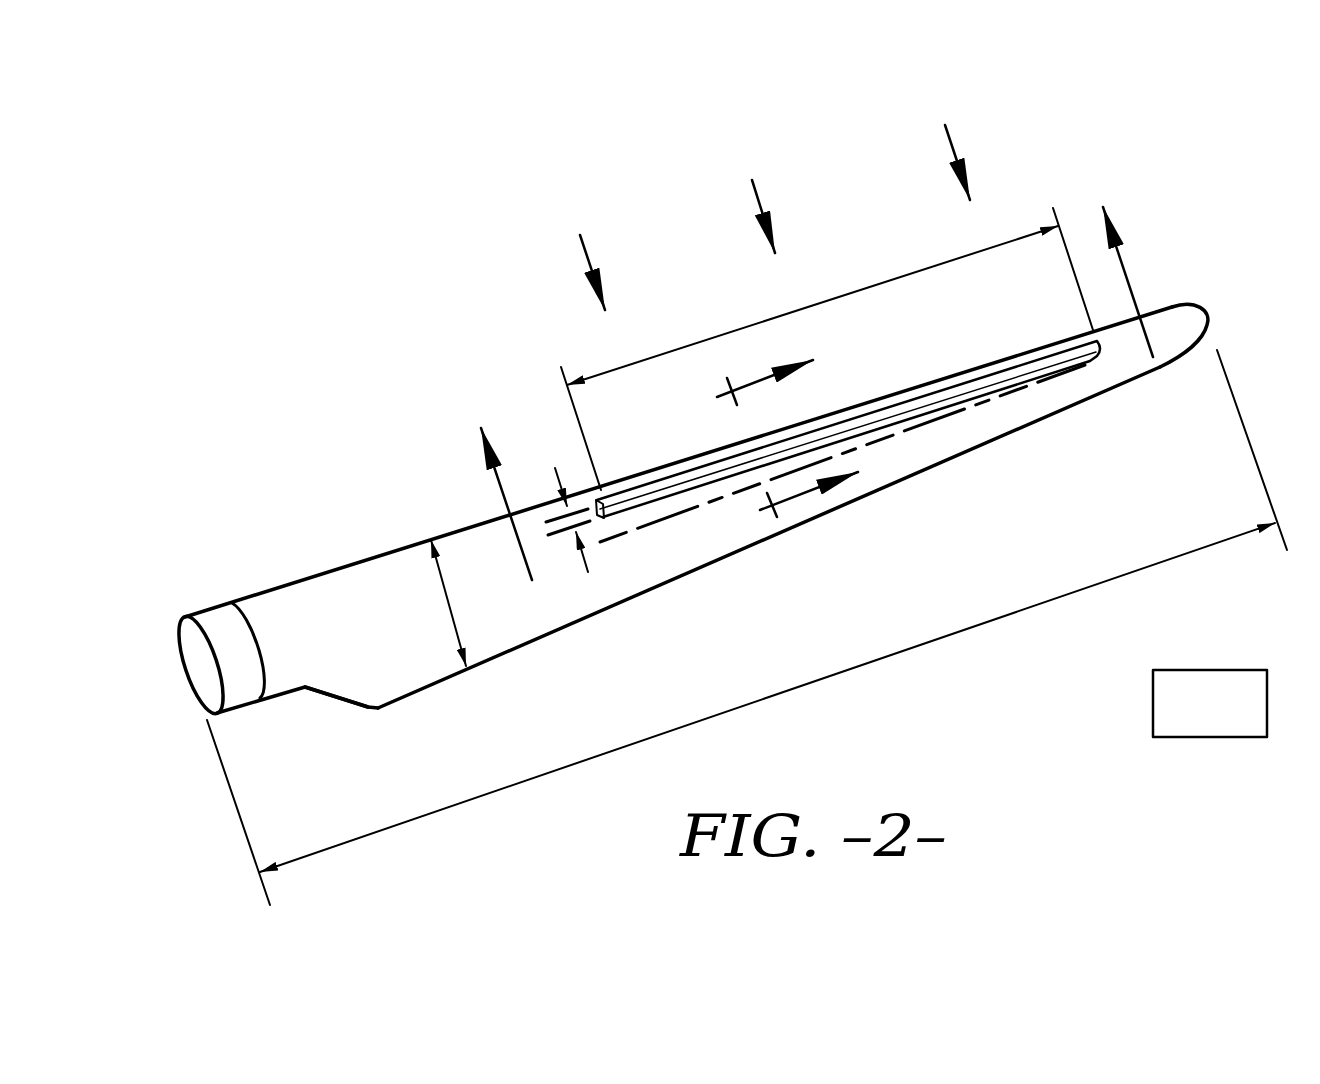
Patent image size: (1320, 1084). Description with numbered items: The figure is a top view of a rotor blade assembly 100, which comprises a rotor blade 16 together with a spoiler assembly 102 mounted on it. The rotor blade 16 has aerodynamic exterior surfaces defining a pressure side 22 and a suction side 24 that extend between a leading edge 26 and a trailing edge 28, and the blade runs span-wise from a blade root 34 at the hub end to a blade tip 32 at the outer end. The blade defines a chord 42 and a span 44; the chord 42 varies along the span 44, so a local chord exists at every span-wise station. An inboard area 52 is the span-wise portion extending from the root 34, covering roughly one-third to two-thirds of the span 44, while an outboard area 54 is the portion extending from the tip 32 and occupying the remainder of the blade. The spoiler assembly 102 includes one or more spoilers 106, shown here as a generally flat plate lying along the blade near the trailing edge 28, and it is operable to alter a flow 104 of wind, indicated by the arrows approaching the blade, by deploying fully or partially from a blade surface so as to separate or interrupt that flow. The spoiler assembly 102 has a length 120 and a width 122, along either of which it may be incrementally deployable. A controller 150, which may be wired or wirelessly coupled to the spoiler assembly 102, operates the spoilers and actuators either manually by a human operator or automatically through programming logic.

The rotor blade assembly 100 is at (372, 357).
The rotor blade 16 is at (388, 524).
The pressure side 22 is at (322, 712).
The suction side 24 is at (372, 617).
The leading edge 26 is at (483, 520).
The trailing edge 28 is at (821, 516).
The blade tip 32 is at (1207, 317).
The blade root 34 is at (207, 607).
The chord 42 is at (460, 622).
The span 44 is at (943, 638).
The inboard area 52 is at (533, 538).
The outboard area 54 is at (1030, 388).
The spoiler assembly 102 is at (708, 490).
The flow 104 is at (587, 262).
The spoiler 106 is at (932, 413).
The length 120 is at (837, 293).
The width 122 is at (588, 567).
The controller 150 is at (1235, 715).